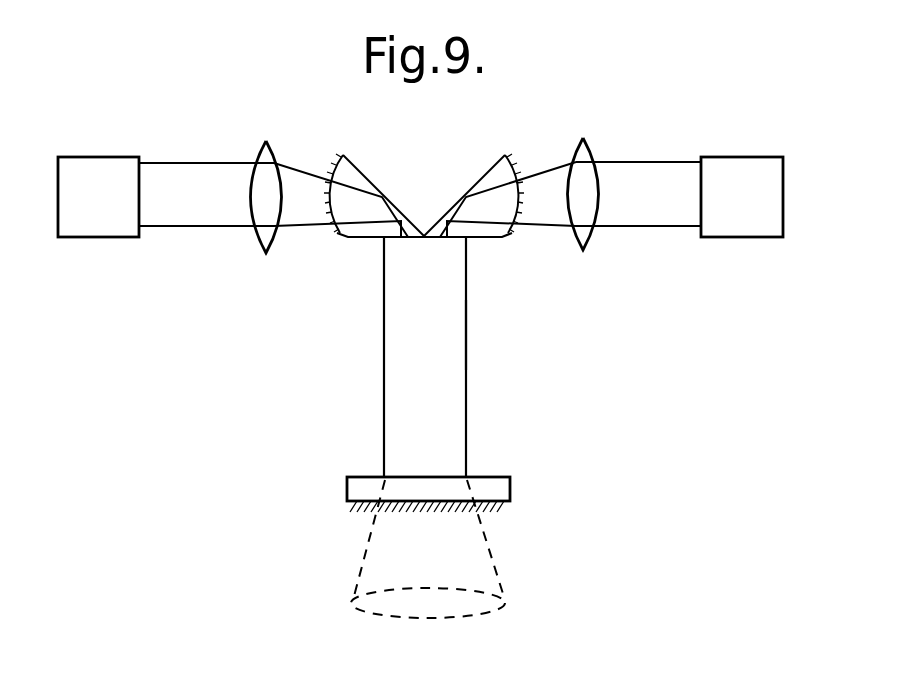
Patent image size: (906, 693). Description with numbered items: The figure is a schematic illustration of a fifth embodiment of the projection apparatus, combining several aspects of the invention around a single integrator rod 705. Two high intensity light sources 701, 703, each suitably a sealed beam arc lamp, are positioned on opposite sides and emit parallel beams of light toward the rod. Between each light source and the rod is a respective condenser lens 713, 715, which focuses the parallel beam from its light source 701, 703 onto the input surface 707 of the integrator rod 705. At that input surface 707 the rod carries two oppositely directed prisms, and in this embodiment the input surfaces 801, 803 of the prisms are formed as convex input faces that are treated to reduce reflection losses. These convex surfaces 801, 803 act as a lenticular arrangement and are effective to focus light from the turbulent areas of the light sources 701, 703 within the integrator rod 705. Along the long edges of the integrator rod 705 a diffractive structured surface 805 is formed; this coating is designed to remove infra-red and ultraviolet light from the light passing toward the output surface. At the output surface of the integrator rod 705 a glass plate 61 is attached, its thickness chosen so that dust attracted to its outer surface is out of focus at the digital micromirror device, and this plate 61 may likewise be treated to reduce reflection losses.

The light source 701 is at (94, 228).
The light source 703 is at (750, 222).
The condenser lens 713 is at (258, 242).
The condenser lens 715 is at (588, 237).
The convex input surface of prism 801 is at (338, 152).
The convex input surface of prism 803 is at (515, 138).
The input surface of integrator rod 707 is at (420, 240).
The integrator rod 705 is at (458, 412).
The diffractive structured surface 805 is at (468, 333).
The glass plate 61 is at (503, 488).